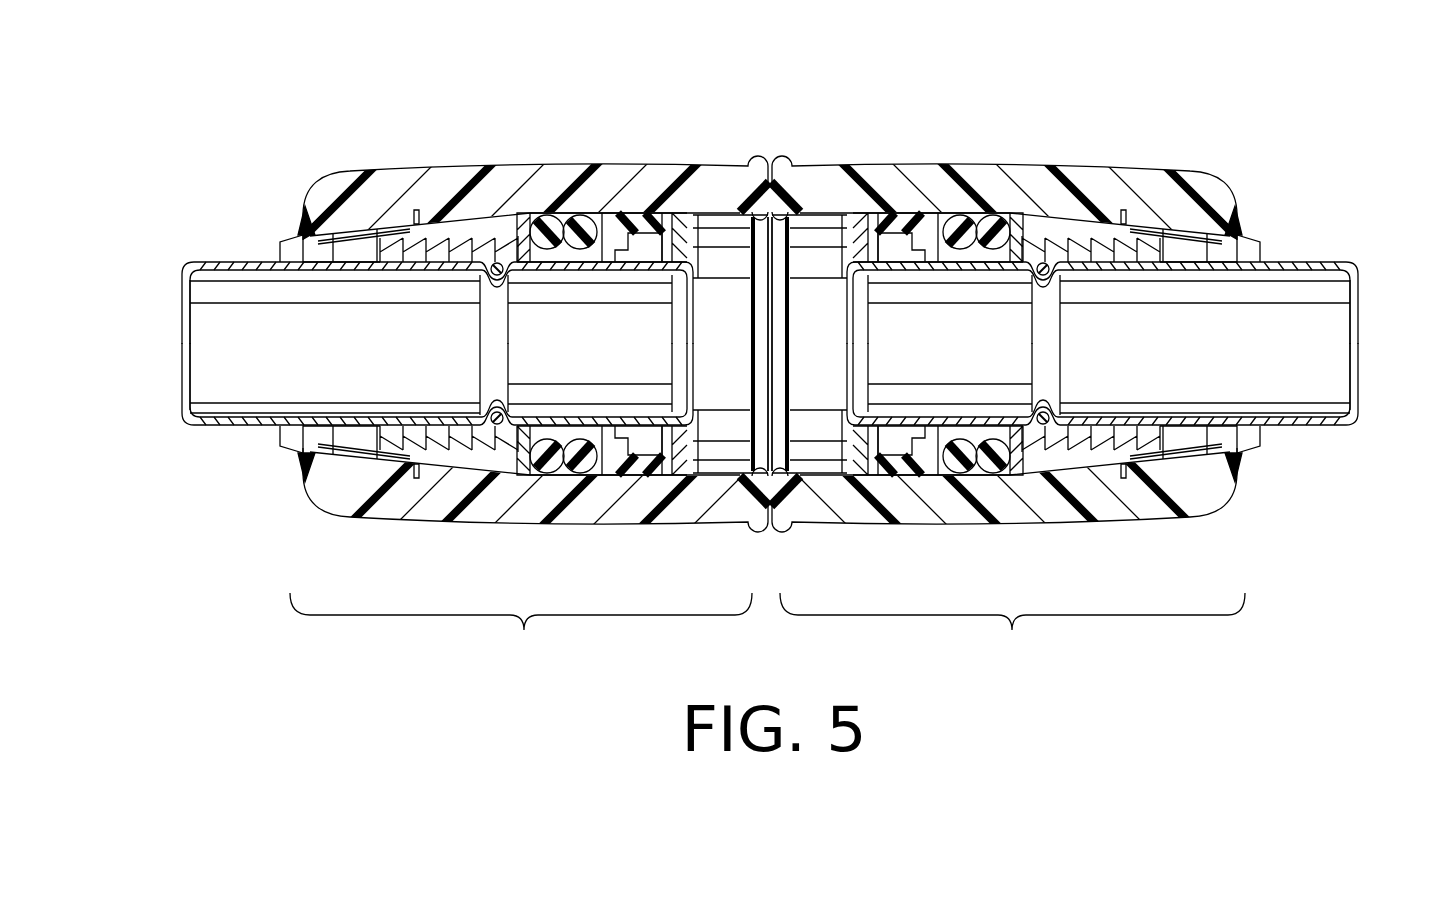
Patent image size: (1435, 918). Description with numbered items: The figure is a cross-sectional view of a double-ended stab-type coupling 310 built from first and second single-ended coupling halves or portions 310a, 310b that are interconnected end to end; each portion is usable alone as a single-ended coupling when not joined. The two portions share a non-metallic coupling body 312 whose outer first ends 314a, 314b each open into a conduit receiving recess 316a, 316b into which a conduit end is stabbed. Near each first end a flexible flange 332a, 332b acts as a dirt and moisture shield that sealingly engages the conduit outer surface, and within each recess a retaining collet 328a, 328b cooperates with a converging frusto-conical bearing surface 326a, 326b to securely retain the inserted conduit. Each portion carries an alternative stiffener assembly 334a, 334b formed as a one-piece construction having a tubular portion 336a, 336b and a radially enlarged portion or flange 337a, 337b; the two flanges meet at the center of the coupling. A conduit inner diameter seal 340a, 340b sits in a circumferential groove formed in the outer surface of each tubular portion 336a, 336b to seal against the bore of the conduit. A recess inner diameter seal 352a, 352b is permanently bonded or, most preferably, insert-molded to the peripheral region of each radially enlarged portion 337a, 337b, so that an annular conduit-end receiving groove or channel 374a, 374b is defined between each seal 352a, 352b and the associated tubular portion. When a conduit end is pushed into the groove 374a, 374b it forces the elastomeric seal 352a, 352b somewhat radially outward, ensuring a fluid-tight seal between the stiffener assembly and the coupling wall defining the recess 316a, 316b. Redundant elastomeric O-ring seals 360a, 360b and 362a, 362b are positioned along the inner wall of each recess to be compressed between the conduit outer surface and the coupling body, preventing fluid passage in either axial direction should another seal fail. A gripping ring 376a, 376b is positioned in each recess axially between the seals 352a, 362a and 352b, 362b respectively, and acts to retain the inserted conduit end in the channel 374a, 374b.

The double-ended coupling 310 is at (773, 309).
The first coupling portion 310a is at (521, 638).
The second coupling portion 310b is at (1012, 638).
The coupling body 312 is at (762, 305).
The first end 314a is at (318, 160).
The first end 314b is at (1222, 160).
The recess 316a is at (298, 250).
The recess 316b is at (1237, 440).
The frusto-conical bearing surface 326a is at (372, 238).
The frusto-conical bearing surface 326b is at (1168, 238).
The retaining collet 328a is at (463, 462).
The retaining collet 328b is at (1080, 463).
The flexible flange 332a is at (287, 453).
The flexible flange 332b is at (1252, 452).
The stiffener assembly 334a is at (262, 442).
The stiffener assembly 334b is at (1312, 252).
The tubular portion 336a is at (249, 369).
The tubular portion 336b is at (1202, 369).
The radially enlarged portion 337a is at (710, 217).
The radially enlarged portion 337b is at (833, 217).
The conduit inner diameter seal 340a is at (490, 284).
The conduit inner diameter seal 340b is at (1050, 284).
The recess inner diameter seal 352a is at (675, 465).
The recess inner diameter seal 352b is at (885, 232).
The O-ring seal 360a is at (537, 250).
The O-ring seal 360b is at (1000, 470).
The O-ring seal 362a is at (583, 214).
The O-ring seal 362b is at (960, 467).
The annular conduit-end receiving groove 374a is at (650, 252).
The annular conduit-end receiving groove 374b is at (853, 450).
The gripping ring 376a is at (640, 248).
The gripping ring 376b is at (883, 217).